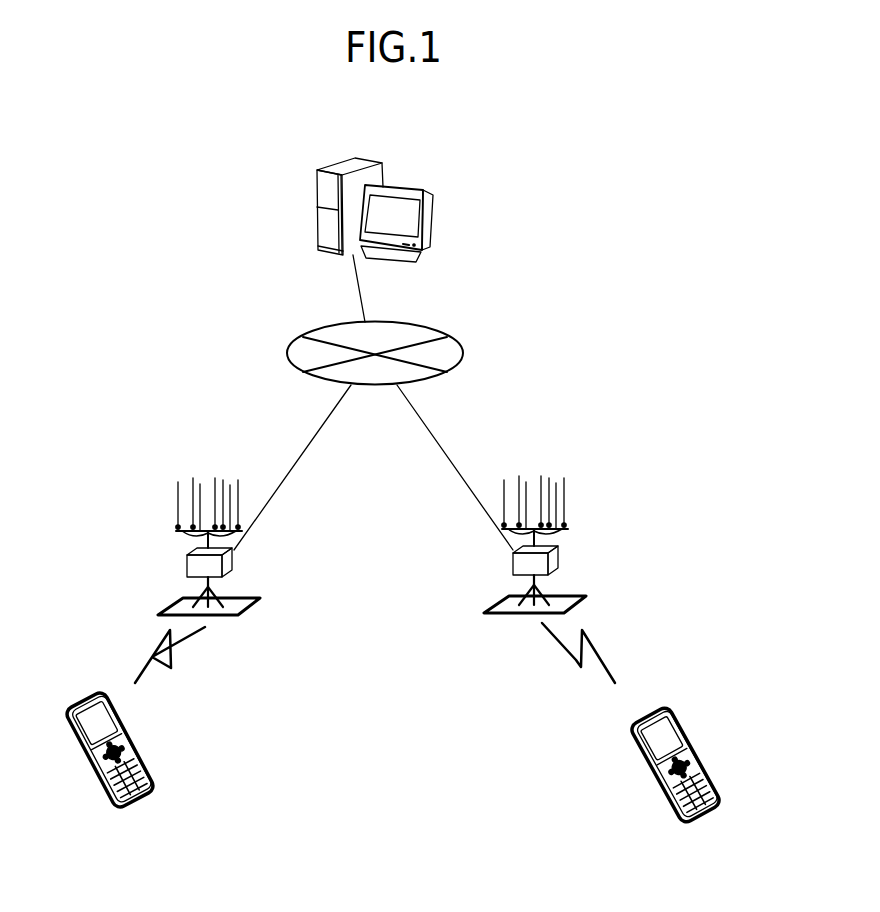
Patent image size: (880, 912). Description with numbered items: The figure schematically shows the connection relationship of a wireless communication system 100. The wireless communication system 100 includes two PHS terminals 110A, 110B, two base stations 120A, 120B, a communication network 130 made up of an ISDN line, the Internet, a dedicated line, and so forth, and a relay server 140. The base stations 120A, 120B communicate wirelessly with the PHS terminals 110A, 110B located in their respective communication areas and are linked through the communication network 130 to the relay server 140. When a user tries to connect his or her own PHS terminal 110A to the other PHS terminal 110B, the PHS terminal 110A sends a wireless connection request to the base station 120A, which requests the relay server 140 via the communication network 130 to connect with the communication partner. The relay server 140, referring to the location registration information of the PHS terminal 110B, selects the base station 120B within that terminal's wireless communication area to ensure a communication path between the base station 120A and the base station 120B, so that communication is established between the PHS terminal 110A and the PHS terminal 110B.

The wireless communication system 100 is at (520, 304).
The PHS terminal 110A is at (135, 738).
The PHS terminal 110B is at (692, 735).
The base station 120A is at (235, 602).
The base station 120B is at (562, 600).
The communication network 130 is at (287, 353).
The relay server 140 is at (368, 162).